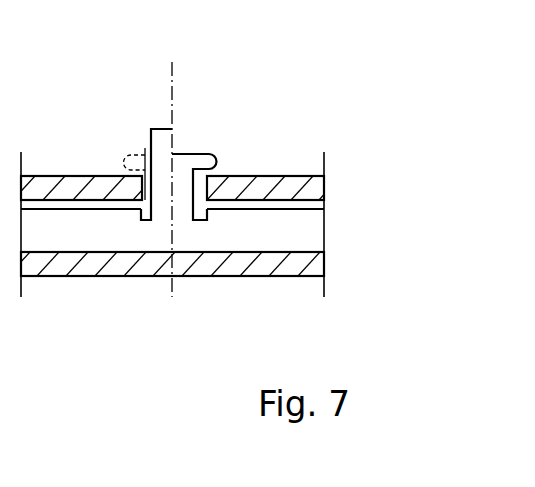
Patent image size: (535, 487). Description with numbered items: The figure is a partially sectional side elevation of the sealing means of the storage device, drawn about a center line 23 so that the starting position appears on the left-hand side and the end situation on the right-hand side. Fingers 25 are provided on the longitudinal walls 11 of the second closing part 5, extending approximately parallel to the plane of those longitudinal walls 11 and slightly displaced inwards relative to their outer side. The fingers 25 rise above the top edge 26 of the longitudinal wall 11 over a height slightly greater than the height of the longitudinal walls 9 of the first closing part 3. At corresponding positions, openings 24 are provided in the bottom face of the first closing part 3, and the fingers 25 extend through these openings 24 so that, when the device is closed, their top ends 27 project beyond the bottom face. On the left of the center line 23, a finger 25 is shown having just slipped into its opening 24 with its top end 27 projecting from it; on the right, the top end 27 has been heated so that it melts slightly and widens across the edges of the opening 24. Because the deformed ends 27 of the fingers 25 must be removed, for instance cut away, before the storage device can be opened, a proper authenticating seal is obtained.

The first closing part 3 is at (271, 187).
The second closing part 5 is at (270, 262).
The longitudinal walls of the first closing part 9 is at (300, 201).
The longitudinal walls of the second closing part 11 is at (300, 234).
The centerline / joint axis 23 is at (188, 104).
The openings 24 is at (145, 150).
The fingers 25 is at (127, 122).
The top edge 26 is at (35, 192).
The top ends 27 is at (161, 140).